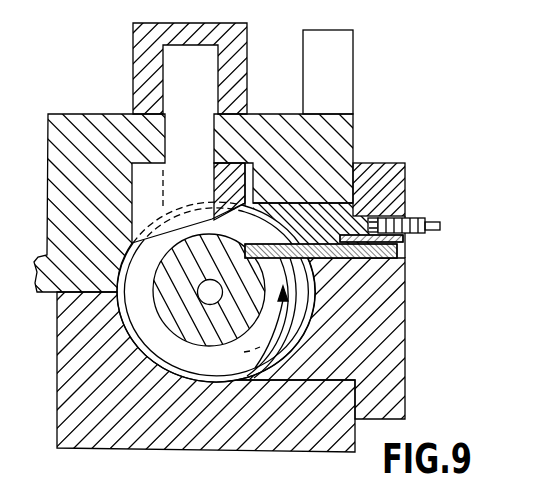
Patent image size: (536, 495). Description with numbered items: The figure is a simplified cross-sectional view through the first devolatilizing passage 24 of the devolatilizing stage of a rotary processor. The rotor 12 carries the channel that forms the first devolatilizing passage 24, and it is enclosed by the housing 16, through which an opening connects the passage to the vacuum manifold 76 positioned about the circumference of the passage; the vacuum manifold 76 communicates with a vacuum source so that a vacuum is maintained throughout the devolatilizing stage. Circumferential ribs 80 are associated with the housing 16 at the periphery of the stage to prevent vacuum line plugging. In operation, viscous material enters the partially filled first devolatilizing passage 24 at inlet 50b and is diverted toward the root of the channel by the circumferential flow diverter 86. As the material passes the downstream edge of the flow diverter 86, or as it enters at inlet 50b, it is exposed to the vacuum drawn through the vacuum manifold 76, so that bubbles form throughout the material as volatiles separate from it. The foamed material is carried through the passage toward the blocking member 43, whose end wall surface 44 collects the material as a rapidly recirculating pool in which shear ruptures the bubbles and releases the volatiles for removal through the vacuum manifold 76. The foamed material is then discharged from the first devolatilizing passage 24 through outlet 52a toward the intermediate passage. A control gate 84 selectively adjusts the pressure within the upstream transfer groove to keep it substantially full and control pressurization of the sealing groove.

The rotor 12 is at (191, 333).
The housing 16 is at (60, 413).
The first devolatilizing passage 24 is at (136, 326).
The blocking member 43 is at (399, 257).
The end wall surface 44 is at (284, 262).
The inlet 50b is at (280, 207).
The outlet 52a is at (301, 326).
The vacuum manifold 76 is at (133, 51).
The circumferential ribs 80 is at (145, 192).
The control gate 84 is at (393, 207).
The circumferential flow diverter 86 is at (232, 200).